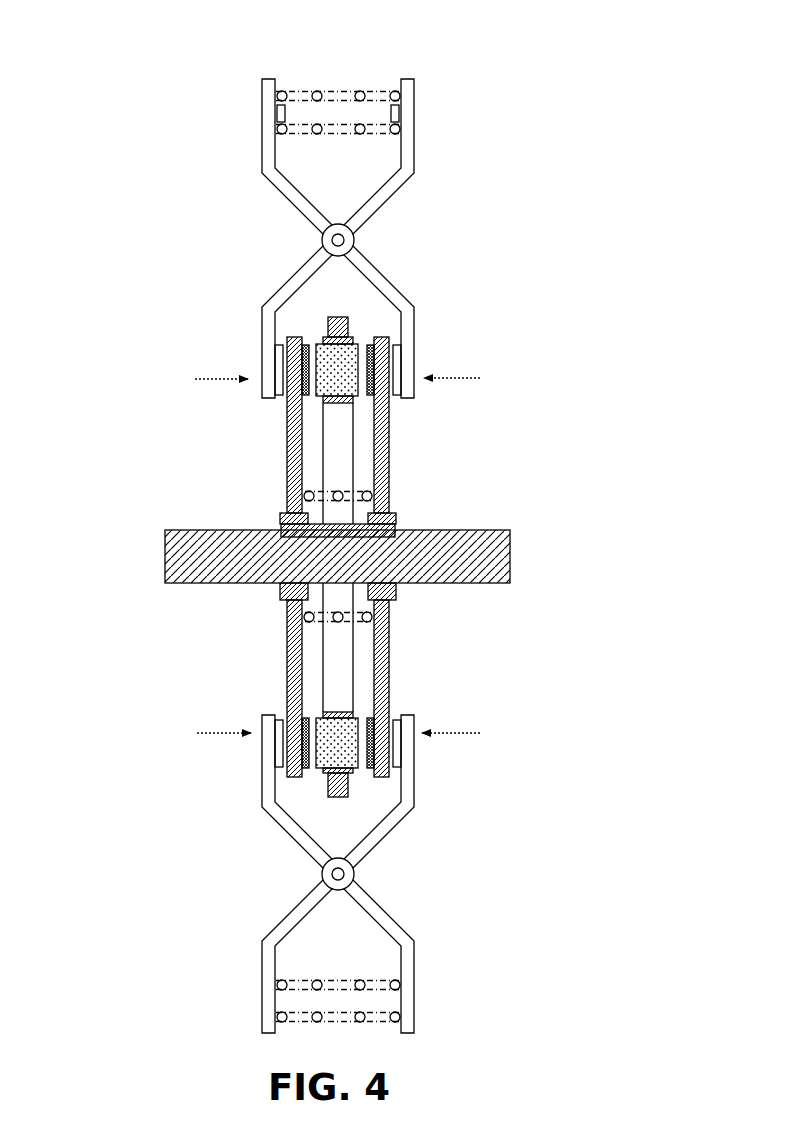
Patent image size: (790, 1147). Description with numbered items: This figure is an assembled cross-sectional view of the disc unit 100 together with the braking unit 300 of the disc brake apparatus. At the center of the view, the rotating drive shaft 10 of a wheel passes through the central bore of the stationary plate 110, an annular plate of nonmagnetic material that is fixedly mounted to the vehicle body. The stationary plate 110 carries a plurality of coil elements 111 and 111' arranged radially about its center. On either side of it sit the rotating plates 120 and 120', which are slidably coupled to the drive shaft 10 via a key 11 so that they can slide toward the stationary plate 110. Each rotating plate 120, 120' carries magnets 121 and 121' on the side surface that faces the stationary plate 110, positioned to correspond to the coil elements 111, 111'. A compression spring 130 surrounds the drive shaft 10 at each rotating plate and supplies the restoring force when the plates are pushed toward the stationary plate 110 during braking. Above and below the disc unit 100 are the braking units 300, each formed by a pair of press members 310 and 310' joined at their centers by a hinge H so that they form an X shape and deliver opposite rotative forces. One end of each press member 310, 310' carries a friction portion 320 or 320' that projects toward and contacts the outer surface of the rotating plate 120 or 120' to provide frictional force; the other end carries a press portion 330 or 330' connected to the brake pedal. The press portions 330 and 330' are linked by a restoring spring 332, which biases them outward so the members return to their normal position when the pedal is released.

The braking unit 300 is at (458, 137).
The press member 310 is at (277, 238).
The press member 310' is at (400, 238).
The hinge H is at (354, 239).
The press portion 330 is at (271, 64).
The press portion 330' is at (405, 81).
The restoring spring 332 is at (359, 91).
The friction portion 320 is at (463, 551).
The friction portion 320' is at (202, 553).
The disc unit 100 is at (163, 498).
The drive shaft 10 is at (497, 549).
The key 11 is at (394, 523).
The stationary plate 110 is at (327, 319).
The coil element 111 is at (426, 334).
The coil element 111' is at (433, 750).
The rotating plate 120 is at (444, 557).
The rotating plate 120' is at (230, 557).
The magnet 121 is at (340, 388).
The magnet 121' is at (340, 719).
The compression spring 130 is at (390, 612).